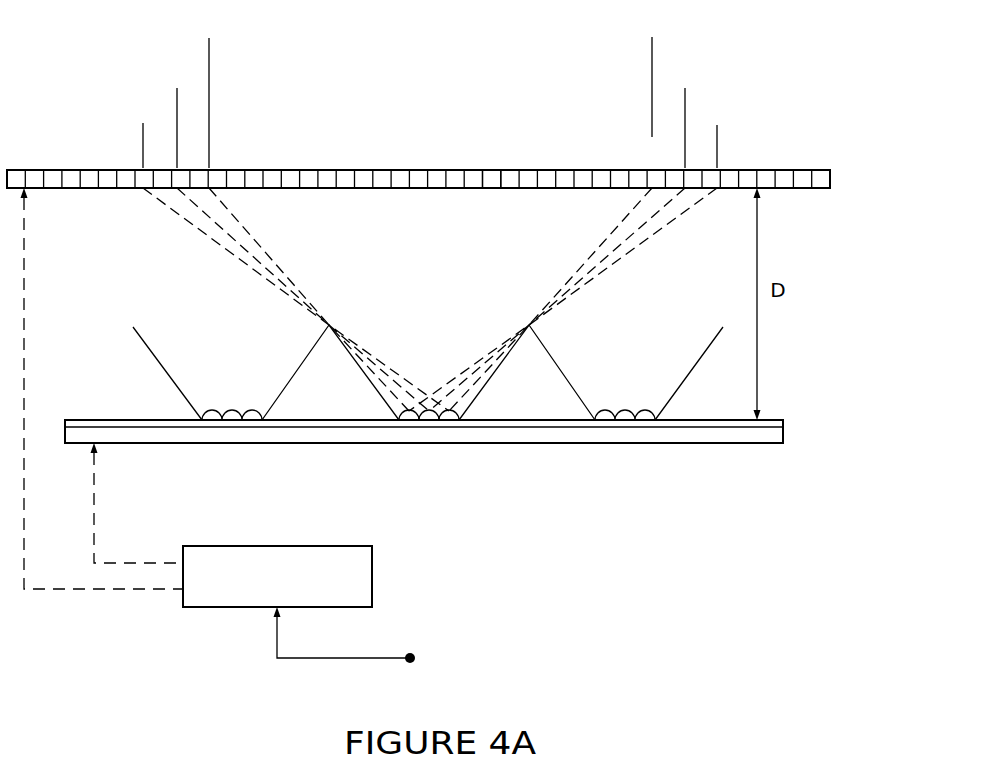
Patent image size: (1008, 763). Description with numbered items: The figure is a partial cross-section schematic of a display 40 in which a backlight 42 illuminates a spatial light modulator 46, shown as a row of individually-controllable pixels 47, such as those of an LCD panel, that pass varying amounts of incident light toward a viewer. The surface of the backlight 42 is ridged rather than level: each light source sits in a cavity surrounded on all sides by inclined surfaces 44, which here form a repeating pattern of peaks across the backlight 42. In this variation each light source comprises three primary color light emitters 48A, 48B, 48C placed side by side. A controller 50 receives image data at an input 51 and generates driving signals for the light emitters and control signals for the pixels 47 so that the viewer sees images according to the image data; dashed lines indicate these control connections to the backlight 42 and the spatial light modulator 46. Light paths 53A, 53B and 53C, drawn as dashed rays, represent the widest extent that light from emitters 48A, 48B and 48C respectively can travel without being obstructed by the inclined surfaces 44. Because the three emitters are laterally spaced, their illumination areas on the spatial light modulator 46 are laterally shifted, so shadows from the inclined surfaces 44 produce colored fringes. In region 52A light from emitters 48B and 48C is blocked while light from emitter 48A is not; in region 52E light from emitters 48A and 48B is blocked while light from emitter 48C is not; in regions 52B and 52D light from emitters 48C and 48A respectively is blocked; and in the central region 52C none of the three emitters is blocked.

The display 40 is at (136, 40).
The backlight 42 is at (828, 328).
The inclined surfaces 44 is at (290, 381).
The spatial light modulator 46 is at (830, 177).
The pixel 47 is at (490, 170).
The light emitter 48A is at (408, 427).
The light emitter 48B is at (429, 427).
The light emitter 48C is at (449, 427).
The controller 50 is at (372, 577).
The input 51 is at (277, 641).
The region 52A is at (658, 150).
The region 52B is at (628, 113).
The central region 52C is at (642, 62).
The region 52D is at (150, 113).
The region 52E is at (187, 148).
The light path 53A is at (273, 261).
The light path 53B is at (231, 216).
The light path 53C is at (197, 229).